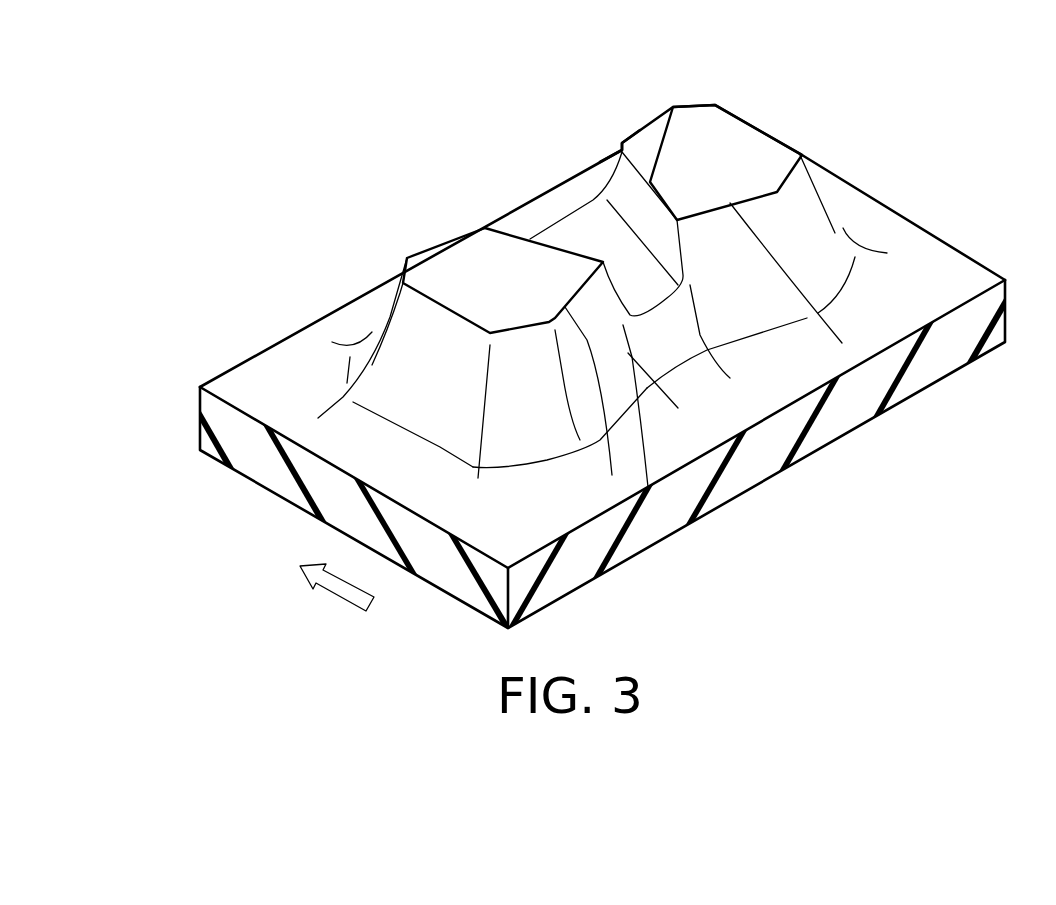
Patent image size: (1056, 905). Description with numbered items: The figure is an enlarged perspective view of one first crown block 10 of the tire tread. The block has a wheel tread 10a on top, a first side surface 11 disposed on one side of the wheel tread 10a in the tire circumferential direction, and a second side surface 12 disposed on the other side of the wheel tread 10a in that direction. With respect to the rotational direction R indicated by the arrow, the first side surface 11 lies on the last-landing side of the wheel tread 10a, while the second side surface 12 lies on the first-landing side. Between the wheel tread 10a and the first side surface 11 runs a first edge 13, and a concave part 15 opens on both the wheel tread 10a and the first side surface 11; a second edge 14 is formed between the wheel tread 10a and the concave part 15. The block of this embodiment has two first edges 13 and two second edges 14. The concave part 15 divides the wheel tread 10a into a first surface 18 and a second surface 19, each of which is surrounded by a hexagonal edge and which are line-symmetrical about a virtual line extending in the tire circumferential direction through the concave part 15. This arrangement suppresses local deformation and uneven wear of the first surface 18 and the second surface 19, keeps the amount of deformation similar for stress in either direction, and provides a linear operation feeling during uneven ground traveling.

The first crown block 10 is at (392, 214).
The wheel tread 10a is at (626, 262).
The first surface 18 is at (475, 268).
The second surface 19 is at (743, 163).
The first side surface 11 is at (619, 351).
The second side surface 12 is at (631, 133).
The first edge 13 is at (648, 487).
The second edge 14 is at (508, 233).
The concave part 15 is at (597, 233).
The rotational direction R is at (320, 577).